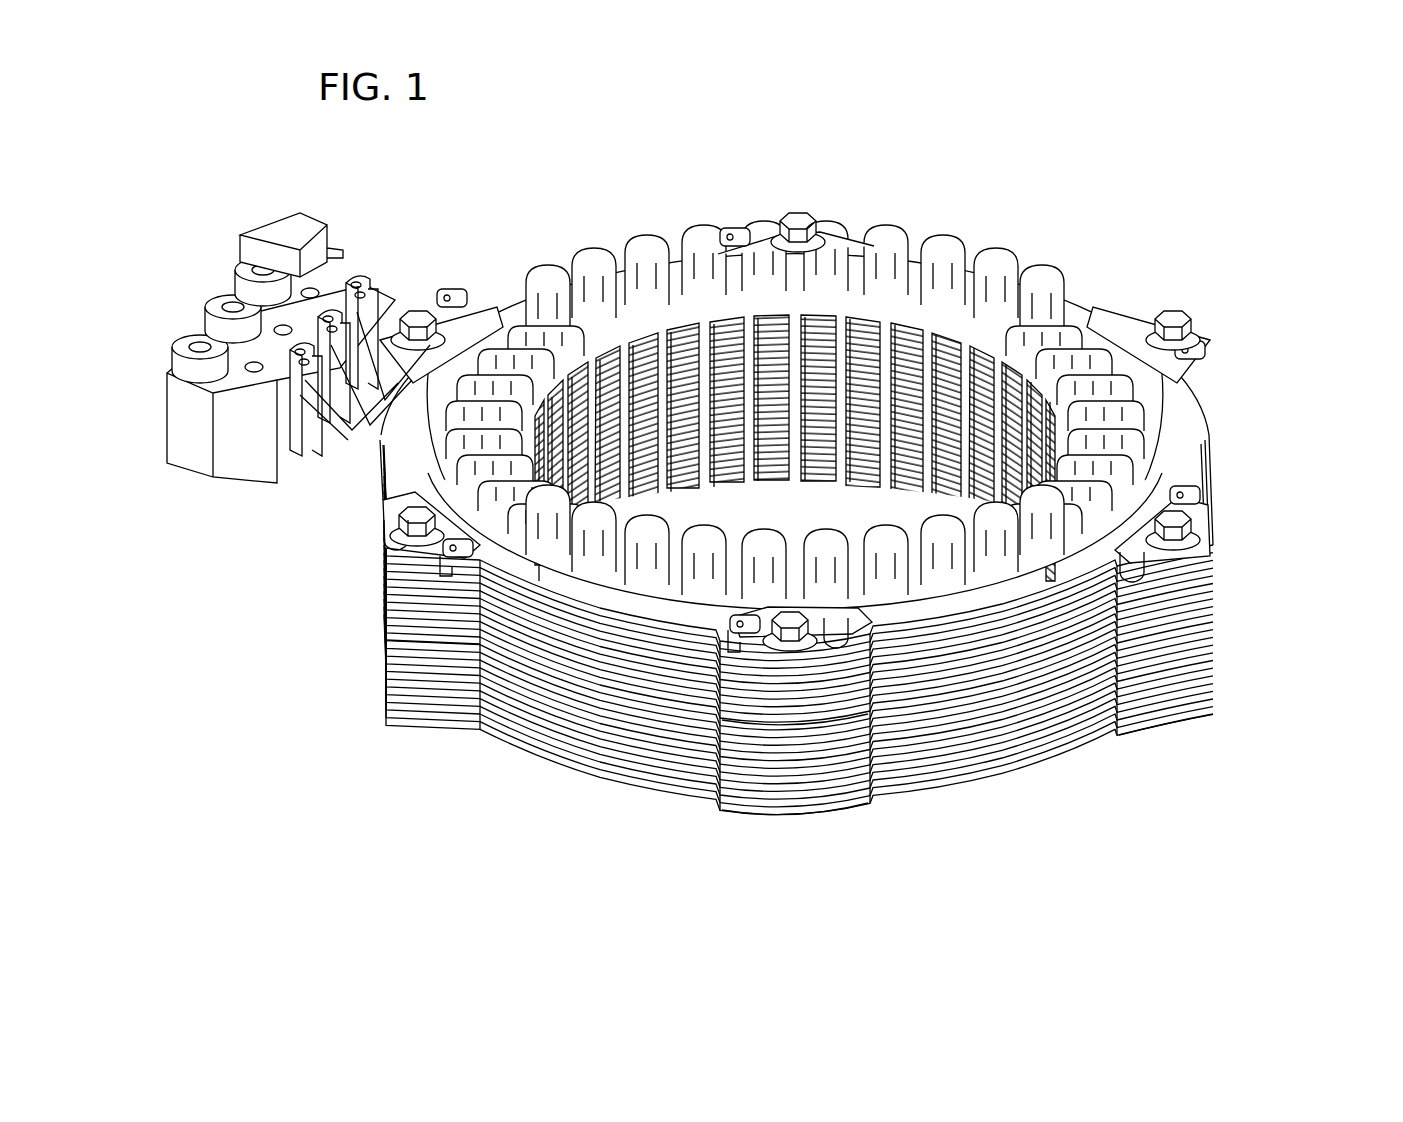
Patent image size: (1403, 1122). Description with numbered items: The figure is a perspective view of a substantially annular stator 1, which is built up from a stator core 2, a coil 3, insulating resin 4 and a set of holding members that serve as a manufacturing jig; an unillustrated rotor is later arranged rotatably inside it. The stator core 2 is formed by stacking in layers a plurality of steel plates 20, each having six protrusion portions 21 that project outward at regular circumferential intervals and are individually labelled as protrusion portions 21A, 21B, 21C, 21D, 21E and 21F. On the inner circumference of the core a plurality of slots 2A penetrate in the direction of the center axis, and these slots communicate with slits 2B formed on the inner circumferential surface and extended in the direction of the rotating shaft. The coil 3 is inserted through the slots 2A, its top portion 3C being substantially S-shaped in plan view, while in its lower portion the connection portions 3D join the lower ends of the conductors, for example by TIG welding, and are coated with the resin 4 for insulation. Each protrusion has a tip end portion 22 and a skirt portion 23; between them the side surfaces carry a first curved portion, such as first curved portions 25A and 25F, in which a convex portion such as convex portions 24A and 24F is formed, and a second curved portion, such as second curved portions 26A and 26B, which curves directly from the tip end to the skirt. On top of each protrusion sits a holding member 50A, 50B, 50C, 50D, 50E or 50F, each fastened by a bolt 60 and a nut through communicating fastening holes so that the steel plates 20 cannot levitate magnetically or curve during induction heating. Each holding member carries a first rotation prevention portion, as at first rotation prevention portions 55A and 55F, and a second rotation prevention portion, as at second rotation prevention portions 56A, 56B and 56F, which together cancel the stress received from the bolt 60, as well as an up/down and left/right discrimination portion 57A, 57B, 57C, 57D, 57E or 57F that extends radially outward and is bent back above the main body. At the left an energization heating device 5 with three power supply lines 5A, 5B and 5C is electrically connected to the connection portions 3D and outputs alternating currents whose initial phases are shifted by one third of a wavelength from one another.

The stator 1 is at (1234, 86).
The stator core 2 is at (1234, 427).
The slots 2A is at (848, 322).
The slits 2B is at (1000, 345).
The coil 3 is at (816, 388).
The top portion 3C is at (700, 495).
The connection portions 3D is at (976, 351).
The resin 4 is at (962, 335).
The energization heating device 5 is at (168, 402).
The power supply line 5A is at (340, 458).
The power supply line 5B is at (372, 472).
The power supply line 5C is at (398, 442).
The steel plates 20 is at (1200, 405).
The protrusion portions 21 is at (791, 511).
The protrusion portion 21A is at (798, 866).
The protrusion portion 21B is at (1224, 590).
The protrusion portion 21C is at (1222, 283).
The protrusion portion 21D is at (796, 173).
The protrusion portion 21E is at (416, 270).
The protrusion portion 21F is at (368, 656).
The tip end portions 22 is at (1215, 575).
The skirt portions 23 is at (1050, 742).
The convex portion 24A is at (742, 808).
The convex portion 24F is at (482, 737).
The first curved portion 25A is at (710, 896).
The first curved portion 25F is at (361, 827).
The second curved portion 26A is at (832, 817).
The second curved portion 26B is at (1152, 727).
The holding member 50A is at (812, 652).
The holding member 50B is at (1224, 531).
The holding member 50C is at (1224, 324).
The holding member 50D is at (800, 198).
The holding member 50E is at (441, 280).
The holding member 50F is at (371, 579).
The first rotation prevention portion 55A is at (736, 648).
The first rotation prevention portion 55F is at (447, 582).
The second rotation prevention portion 56A is at (835, 642).
The second rotation prevention portion 56B is at (1145, 567).
The second rotation prevention portion 56F is at (371, 543).
The up/down and left/right discrimination portion 57A is at (746, 642).
The up/down and left/right discrimination portion 57B is at (1200, 492).
The up/down and left/right discrimination portion 57C is at (1205, 348).
The up/down and left/right discrimination portion 57D is at (742, 226).
The up/down and left/right discrimination portion 57E is at (458, 290).
The up/down and left/right discrimination portion 57F is at (462, 562).
The bolt 60 is at (806, 212).